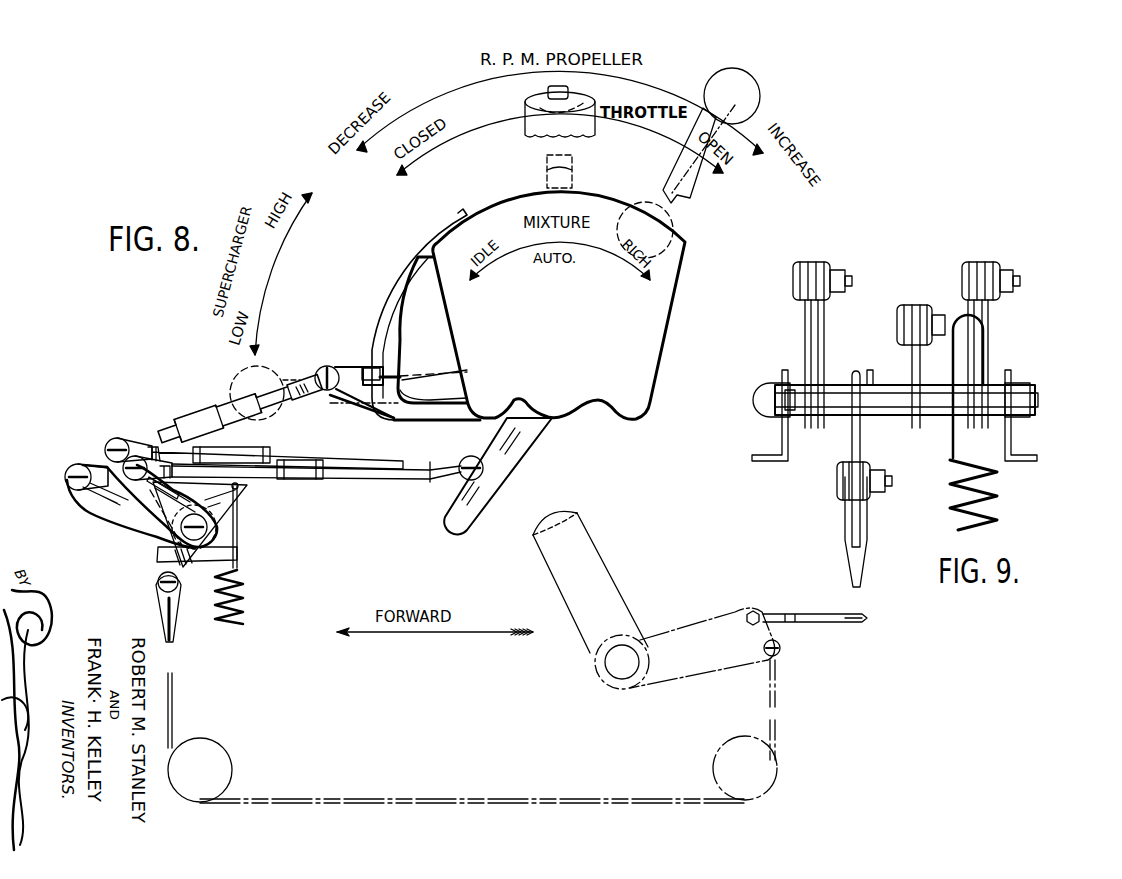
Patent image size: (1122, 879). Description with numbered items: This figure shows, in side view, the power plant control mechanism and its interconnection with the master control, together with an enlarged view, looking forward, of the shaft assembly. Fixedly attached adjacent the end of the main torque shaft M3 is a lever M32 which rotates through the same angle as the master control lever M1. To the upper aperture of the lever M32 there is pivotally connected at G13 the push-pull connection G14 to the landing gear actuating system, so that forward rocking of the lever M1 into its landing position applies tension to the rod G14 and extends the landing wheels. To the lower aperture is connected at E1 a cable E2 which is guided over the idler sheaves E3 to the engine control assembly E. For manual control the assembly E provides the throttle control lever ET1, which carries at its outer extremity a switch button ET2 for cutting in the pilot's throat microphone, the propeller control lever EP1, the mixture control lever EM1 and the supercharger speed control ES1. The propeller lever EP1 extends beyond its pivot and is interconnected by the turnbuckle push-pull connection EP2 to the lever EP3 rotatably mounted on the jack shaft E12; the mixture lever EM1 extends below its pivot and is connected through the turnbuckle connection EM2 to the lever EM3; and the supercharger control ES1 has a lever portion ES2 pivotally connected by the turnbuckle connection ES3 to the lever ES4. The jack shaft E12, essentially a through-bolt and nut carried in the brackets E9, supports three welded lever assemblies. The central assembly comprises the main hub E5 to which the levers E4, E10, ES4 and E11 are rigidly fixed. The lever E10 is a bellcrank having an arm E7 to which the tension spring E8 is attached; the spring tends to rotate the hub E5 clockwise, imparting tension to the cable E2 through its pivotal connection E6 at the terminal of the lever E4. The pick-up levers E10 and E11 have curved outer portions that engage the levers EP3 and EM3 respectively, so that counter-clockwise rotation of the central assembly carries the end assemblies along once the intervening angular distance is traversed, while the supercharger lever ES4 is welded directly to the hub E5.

In FIG. 8, the engine control assembly E is at (566, 323).
In FIG. 8, the throttle control lever ET1 is at (547, 168).
In FIG. 8, the switch button ET2 is at (525, 99).
In FIG. 8, the propeller control lever EP1 is at (755, 95).
In FIG. 8, the turnbuckle push-pull connection EP2 is at (270, 453).
In FIG. 8, the lever EP3 is at (107, 465).
In FIG. 8, the mixture control lever EM1 is at (688, 243).
In FIG. 8, the push-pull turnbuckle connection EM2 is at (310, 473).
In FIG. 9, the push-pull turnbuckle connection EM2 is at (820, 267).
In FIG. 8, the lever EM3 is at (143, 493).
In FIG. 9, the lever EM3 is at (807, 352).
In FIG. 8, the supercharger speed control ES1 is at (293, 373).
In FIG. 8, the lever portion ES2 is at (347, 368).
In FIG. 8, the turnbuckle push-pull connection ES3 is at (195, 418).
In FIG. 9, the turnbuckle push-pull connection ES3 is at (917, 320).
In FIG. 8, the supercharger lever ES4 is at (90, 503).
In FIG. 9, the supercharger lever ES4 is at (913, 363).
In FIG. 8, the cable connection E1 is at (790, 650).
In FIG. 8, the cable E2 is at (455, 792).
In FIG. 9, the cable E2 is at (853, 567).
In FIG. 8, the idler sheaves E3 is at (215, 767).
In FIG. 8, the lever E4 is at (160, 585).
In FIG. 9, the lever E4 is at (855, 438).
In FIG. 8, the main hub E5 is at (204, 530).
In FIG. 9, the main hub E5 is at (870, 377).
In FIG. 9, the pivotal connection E6 is at (893, 497).
In FIG. 8, the arm E7 is at (240, 503).
In FIG. 9, the arm E7 is at (970, 357).
In FIG. 8, the tension spring E8 is at (240, 604).
In FIG. 9, the tension spring E8 is at (993, 490).
In FIG. 8, the brackets E9 is at (153, 560).
In FIG. 9, the brackets E9 is at (782, 448).
In FIG. 9, the pick-up lever E10 is at (990, 305).
In FIG. 8, the pick-up lever E11 is at (232, 492).
In FIG. 9, the pick-up lever E11 is at (808, 300).
In FIG. 9, the jack shaft E12 is at (770, 391).
In FIG. 8, the master control lever M1 is at (602, 580).
In FIG. 8, the main torque shaft M3 is at (613, 667).
In FIG. 8, the lever M32 is at (700, 630).
In FIG. 8, the pivotal connection G13 is at (753, 610).
In FIG. 8, the push-pull connection G14 is at (800, 616).